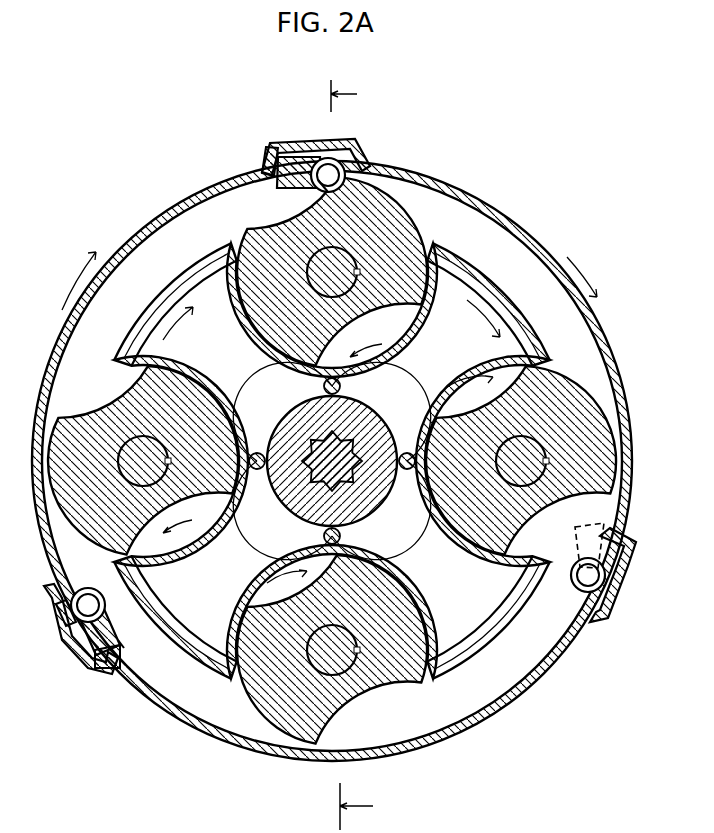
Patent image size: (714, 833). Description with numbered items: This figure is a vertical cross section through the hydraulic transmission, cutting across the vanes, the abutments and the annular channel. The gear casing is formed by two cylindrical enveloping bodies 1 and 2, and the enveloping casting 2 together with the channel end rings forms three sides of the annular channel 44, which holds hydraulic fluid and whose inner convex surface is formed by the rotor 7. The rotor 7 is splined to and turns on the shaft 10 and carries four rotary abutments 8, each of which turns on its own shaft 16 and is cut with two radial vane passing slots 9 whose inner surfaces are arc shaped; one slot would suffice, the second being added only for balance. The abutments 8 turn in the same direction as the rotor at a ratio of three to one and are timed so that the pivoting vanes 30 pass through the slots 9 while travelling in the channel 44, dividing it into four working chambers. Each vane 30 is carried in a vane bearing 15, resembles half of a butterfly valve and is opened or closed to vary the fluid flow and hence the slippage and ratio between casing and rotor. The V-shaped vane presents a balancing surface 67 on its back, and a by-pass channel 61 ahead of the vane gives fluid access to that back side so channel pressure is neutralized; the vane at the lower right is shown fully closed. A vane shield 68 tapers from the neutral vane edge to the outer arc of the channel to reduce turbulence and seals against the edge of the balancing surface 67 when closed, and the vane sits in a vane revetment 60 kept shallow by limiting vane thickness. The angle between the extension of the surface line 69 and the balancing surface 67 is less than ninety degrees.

The cylindrical enveloping body 1 is at (352, 453).
The cylindrical enveloping body 2 is at (173, 205).
The rotor 7 is at (124, 332).
The rotary abutment 8 is at (332, 460).
The vane passing slot 9 is at (316, 523).
The shaft 10 is at (331, 460).
The vane bearing 15 is at (58, 598).
The abutment shaft 16 is at (354, 265).
The pivoting vane 30 is at (104, 632).
The annular channel 44 is at (329, 464).
The vane revetment 60 is at (353, 144).
The by-pass channel 61 is at (84, 594).
The balancing surface 67 is at (276, 147).
The vane shield 68 is at (277, 188).
The surface line 69 is at (306, 190).